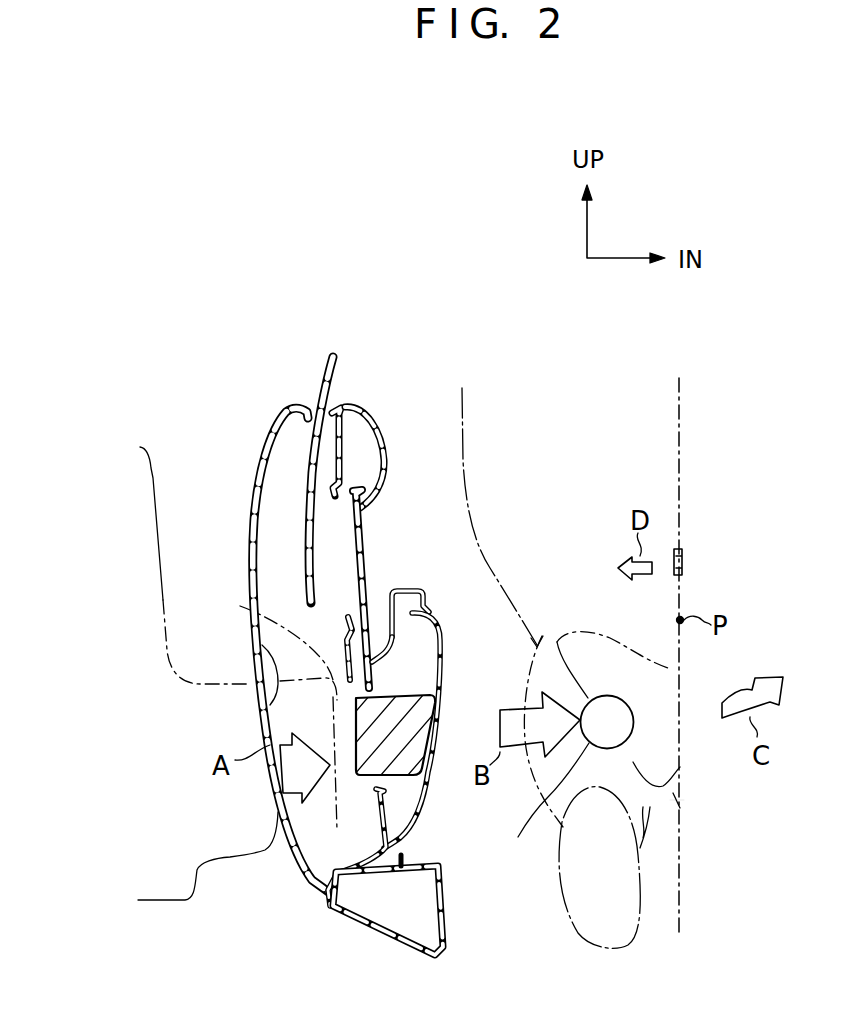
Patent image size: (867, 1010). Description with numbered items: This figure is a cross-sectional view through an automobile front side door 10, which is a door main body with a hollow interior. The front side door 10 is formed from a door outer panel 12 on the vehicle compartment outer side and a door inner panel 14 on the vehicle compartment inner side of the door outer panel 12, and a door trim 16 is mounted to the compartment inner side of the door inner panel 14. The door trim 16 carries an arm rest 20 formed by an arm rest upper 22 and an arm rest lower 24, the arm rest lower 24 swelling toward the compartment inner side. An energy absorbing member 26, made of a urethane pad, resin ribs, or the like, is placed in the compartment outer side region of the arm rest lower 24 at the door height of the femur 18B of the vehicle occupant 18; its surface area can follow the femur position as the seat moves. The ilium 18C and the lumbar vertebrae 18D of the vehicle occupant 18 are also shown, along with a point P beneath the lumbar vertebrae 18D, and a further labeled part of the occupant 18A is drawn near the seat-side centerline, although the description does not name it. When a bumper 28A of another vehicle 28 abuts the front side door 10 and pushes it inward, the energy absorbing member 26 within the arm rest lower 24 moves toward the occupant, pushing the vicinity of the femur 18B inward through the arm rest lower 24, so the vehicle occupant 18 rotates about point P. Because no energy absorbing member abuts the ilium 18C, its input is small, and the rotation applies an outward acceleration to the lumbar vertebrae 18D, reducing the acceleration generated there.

The front side door 10 is at (320, 962).
The door outer panel 12 is at (312, 843).
The door inner panel 14 is at (330, 903).
The door trim 16 is at (385, 333).
The vehicle occupant 18 is at (462, 388).
The door outer edge 18A is at (676, 790).
The femur 18B is at (533, 807).
The ilium 18C is at (558, 635).
The lumbar vertebrae 18D is at (684, 560).
The arm rest 20 is at (442, 545).
The arm rest upper 22 is at (393, 591).
The arm rest lower 24 is at (447, 640).
The energy absorbing member 26 is at (398, 774).
The another vehicle 28 is at (155, 494).
The bumper 28A is at (290, 630).